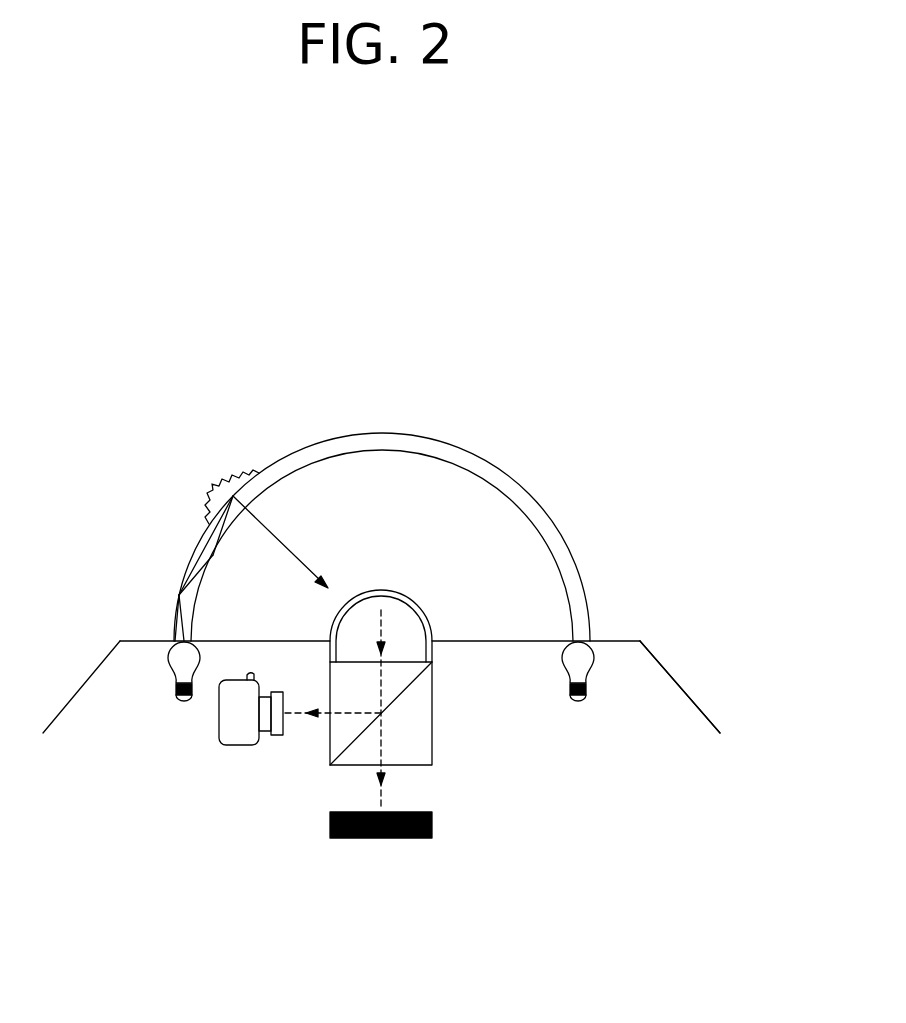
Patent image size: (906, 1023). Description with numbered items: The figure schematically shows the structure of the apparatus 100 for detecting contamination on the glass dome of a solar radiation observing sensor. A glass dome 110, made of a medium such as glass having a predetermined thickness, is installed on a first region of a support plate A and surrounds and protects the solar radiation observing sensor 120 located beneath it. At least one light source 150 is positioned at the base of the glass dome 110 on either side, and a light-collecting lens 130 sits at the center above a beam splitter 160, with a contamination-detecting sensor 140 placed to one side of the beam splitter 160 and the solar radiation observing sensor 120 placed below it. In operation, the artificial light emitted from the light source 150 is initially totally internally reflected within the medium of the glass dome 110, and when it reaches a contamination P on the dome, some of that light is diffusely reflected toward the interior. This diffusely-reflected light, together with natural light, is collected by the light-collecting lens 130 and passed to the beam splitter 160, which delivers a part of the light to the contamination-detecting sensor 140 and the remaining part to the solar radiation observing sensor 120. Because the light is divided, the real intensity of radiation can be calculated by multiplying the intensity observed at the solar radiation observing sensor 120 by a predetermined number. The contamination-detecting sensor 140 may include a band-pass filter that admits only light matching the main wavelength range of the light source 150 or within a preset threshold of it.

The apparatus for detecting the contamination on the glass dome of the solar radiati 100 is at (150, 309).
The glass dome 110 is at (304, 452).
The contamination P is at (221, 484).
The light source 150 is at (177, 660).
The light-collecting lens 130 is at (412, 604).
The beam splitter 160 is at (410, 708).
The contamination-detecting sensor 140 is at (242, 741).
The solar radiation observing sensor 120 is at (417, 812).
The support plate A is at (686, 693).